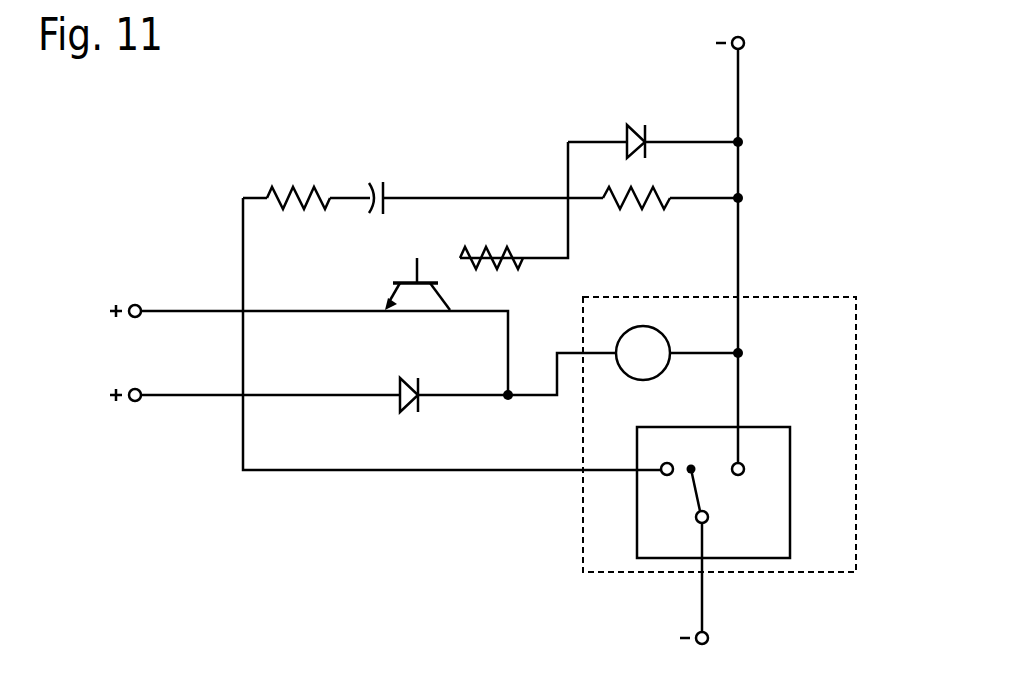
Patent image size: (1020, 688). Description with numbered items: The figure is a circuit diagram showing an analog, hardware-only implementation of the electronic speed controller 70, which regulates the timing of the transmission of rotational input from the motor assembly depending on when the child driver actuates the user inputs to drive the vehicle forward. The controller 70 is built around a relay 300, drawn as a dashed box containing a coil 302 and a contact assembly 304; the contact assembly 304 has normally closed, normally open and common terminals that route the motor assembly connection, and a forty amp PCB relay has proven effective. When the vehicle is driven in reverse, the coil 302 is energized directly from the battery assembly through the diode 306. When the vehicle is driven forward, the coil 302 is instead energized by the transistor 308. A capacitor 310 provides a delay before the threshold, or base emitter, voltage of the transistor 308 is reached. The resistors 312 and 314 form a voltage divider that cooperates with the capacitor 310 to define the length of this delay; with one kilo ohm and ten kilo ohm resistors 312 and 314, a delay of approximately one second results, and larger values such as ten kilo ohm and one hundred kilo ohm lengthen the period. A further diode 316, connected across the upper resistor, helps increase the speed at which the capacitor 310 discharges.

The controller 70 is at (274, 106).
The relay 300 is at (787, 297).
The coil 302 is at (662, 334).
The contact assembly 304 is at (764, 427).
The diode 306 is at (421, 390).
The transistor 308 is at (396, 290).
The capacitor 310 is at (388, 190).
The resistor 312 is at (270, 190).
The resistor 314 is at (668, 192).
The diode 316 is at (648, 134).